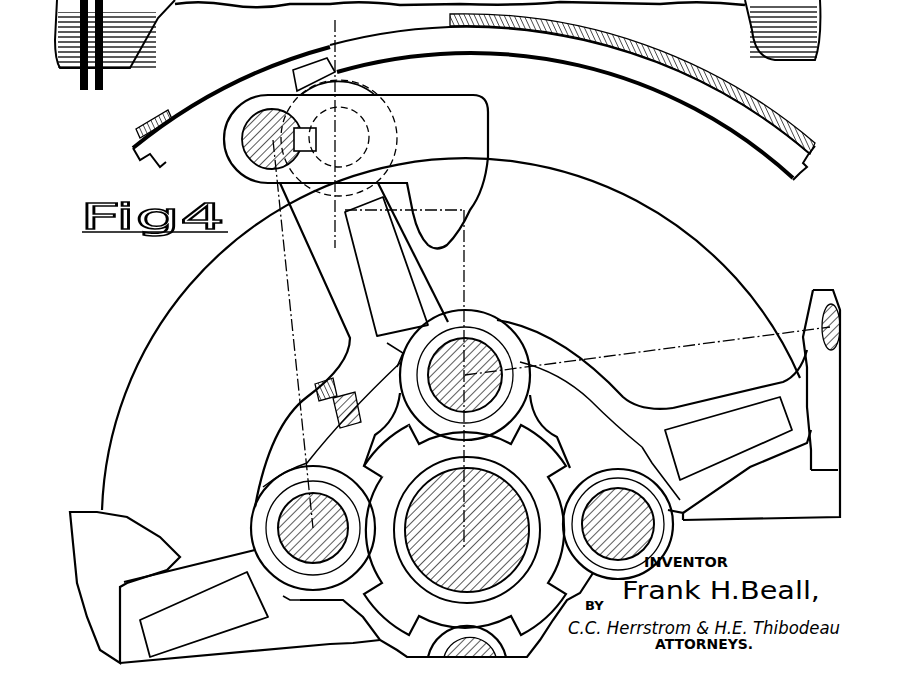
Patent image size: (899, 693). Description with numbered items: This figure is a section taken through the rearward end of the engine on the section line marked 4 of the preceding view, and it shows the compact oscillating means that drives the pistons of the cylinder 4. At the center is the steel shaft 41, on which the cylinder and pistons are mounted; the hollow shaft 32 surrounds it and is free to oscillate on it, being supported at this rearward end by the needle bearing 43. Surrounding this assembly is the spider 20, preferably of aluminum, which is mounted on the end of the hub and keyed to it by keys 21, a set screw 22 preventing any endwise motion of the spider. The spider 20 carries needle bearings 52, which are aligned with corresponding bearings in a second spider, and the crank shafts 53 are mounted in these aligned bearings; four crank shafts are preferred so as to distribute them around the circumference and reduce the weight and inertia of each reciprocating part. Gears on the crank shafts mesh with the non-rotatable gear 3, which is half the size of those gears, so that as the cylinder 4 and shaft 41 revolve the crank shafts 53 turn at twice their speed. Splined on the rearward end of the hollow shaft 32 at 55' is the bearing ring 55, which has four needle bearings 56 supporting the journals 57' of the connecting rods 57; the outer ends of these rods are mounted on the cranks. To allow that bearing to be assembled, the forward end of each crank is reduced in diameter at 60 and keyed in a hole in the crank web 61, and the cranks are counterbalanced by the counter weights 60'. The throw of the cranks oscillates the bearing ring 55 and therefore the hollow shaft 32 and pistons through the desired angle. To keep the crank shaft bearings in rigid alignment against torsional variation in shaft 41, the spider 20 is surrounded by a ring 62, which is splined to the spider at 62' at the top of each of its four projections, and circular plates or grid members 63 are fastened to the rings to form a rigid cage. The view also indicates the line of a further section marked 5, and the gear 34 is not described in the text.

The non-rotatable gear 3 is at (336, 44).
The cylinder 4 is at (607, 198).
The section line of Fig. 5 is at (450, 523).
The spider 20 is at (345, 252).
The keys 21 is at (387, 361).
The set screw 22 is at (315, 403).
The hollow shaft 32 is at (398, 475).
The sun gear 34 is at (507, 582).
The steel shaft 41 is at (192, 6).
The needle bearing 43 is at (499, 476).
The needle bearings 52 is at (370, 138).
The crank shafts 53 is at (385, 122).
The bearing ring 55 is at (447, 478).
The spline 55' is at (452, 497).
The needle bearings 56 is at (493, 345).
The connecting rods 57 is at (537, 344).
The journals 57' is at (439, 450).
The reduced end of crank 60 is at (345, 172).
The counter weights 60' is at (455, 390).
The crank web 61 is at (268, 180).
The rings 62 is at (474, 103).
The spline 62' is at (313, 76).
The circular plates or grid members 63 is at (156, 124).